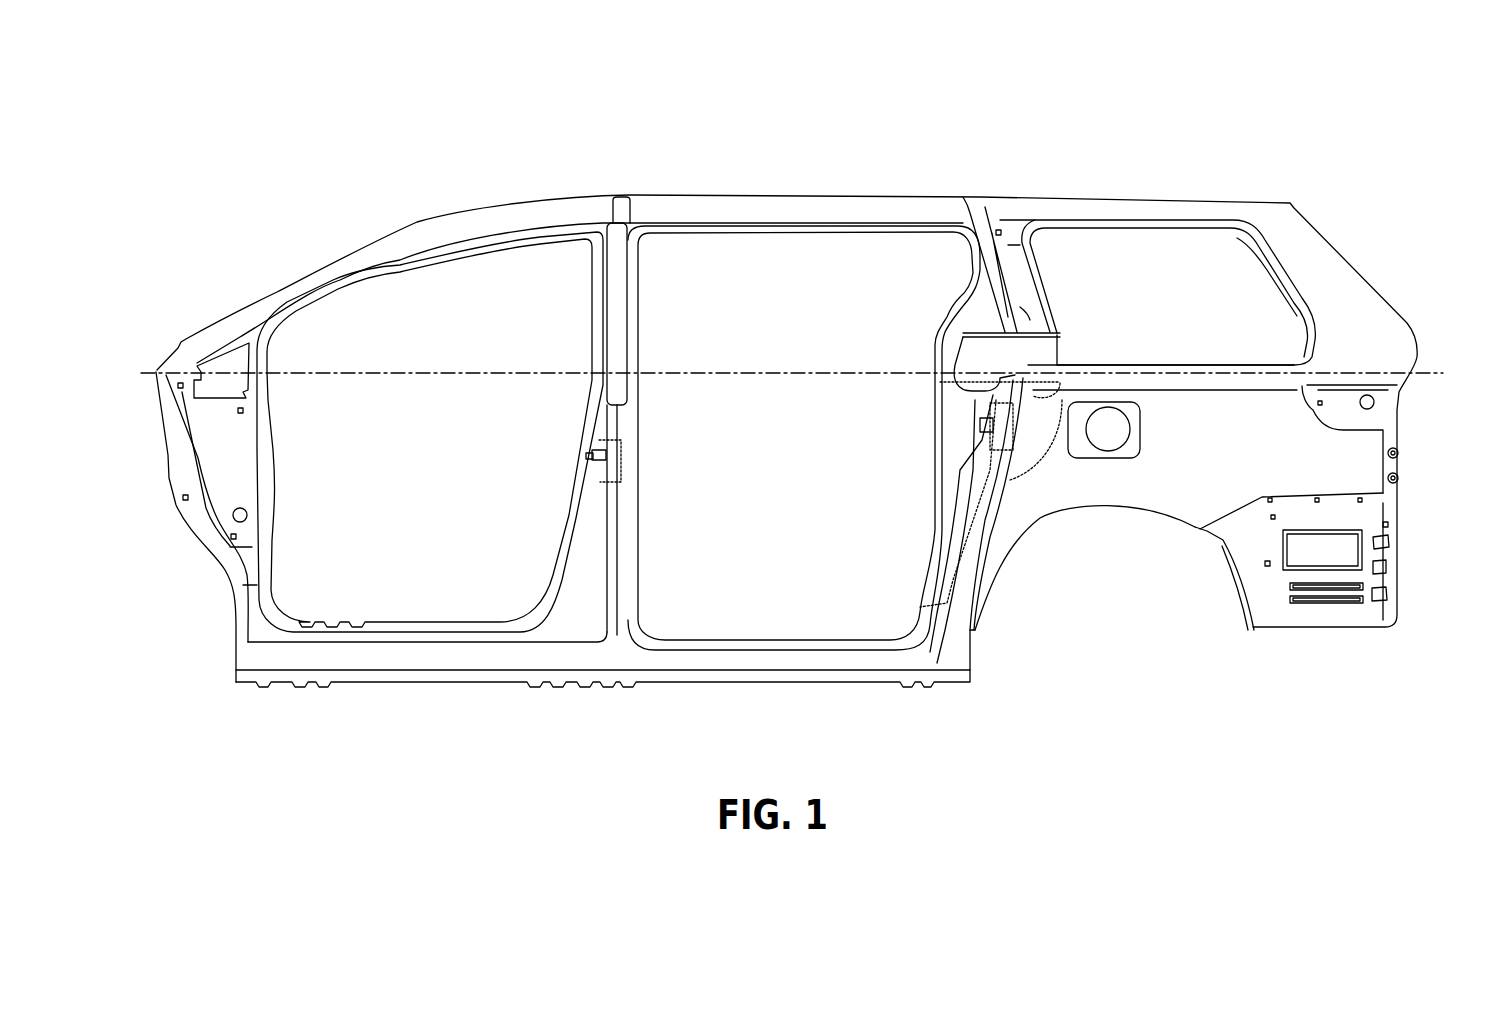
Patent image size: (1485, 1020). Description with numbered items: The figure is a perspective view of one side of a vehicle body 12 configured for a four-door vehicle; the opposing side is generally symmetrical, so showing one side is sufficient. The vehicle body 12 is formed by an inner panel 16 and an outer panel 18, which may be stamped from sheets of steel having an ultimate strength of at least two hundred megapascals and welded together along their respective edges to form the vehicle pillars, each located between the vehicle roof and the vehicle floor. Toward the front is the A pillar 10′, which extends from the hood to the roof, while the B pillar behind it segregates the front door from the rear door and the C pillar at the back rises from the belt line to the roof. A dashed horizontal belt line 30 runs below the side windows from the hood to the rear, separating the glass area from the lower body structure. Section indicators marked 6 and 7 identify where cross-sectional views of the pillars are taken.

The vehicle body 12 is at (1331, 208).
The A pillar 10′ is at (271, 355).
The inner panel 16 is at (1072, 380).
The outer panel 18 is at (1035, 507).
The belt line 30 is at (141, 372).
The section line 6- 6 is at (560, 455).
The section line 7- 7 is at (927, 418).